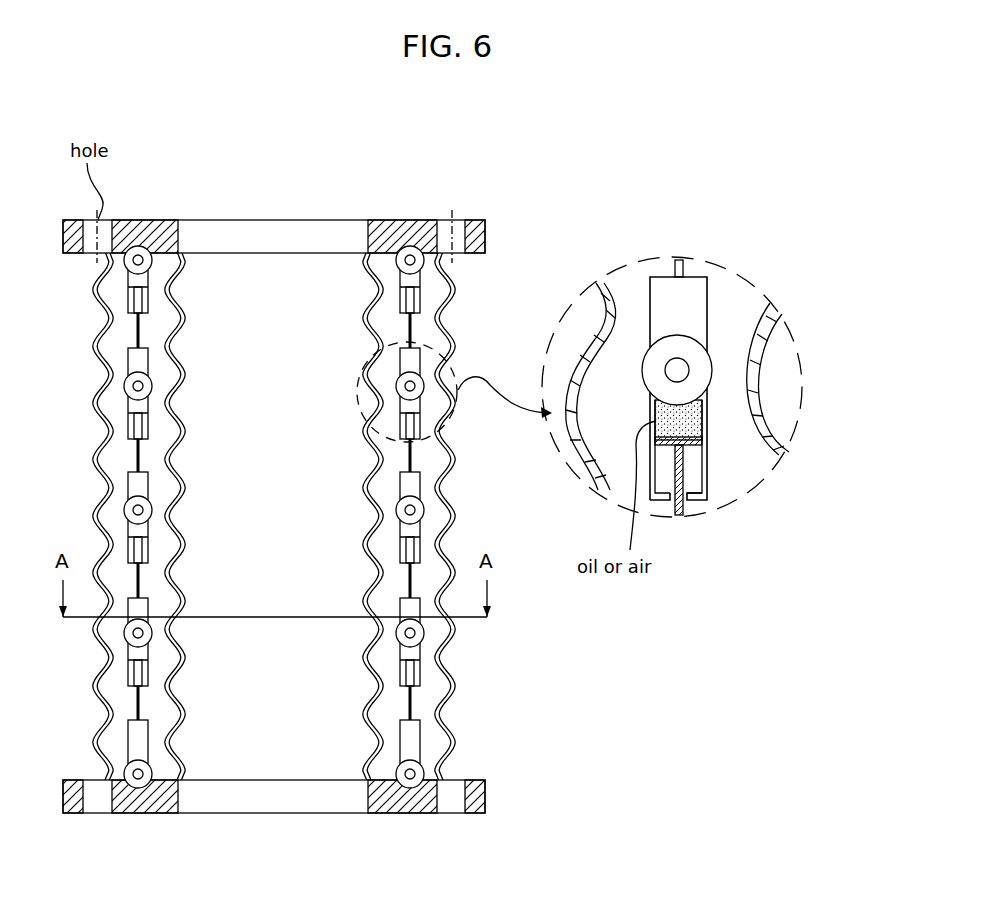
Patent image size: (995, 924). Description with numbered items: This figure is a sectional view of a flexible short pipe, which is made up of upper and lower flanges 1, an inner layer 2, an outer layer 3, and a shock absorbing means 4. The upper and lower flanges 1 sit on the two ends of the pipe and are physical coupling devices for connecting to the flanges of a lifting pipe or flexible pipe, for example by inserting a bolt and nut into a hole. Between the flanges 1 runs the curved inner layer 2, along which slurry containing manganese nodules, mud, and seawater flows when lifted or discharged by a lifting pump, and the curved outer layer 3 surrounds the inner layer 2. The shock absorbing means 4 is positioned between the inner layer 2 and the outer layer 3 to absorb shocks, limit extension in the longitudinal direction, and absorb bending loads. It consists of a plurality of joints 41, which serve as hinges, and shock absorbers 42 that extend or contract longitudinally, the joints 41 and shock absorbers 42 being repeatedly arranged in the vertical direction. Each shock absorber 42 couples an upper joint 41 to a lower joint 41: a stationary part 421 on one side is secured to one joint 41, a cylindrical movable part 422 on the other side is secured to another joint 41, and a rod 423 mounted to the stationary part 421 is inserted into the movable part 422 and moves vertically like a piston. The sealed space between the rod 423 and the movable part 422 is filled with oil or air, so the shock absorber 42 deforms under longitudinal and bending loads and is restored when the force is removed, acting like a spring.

The upper and lower flanges 1 is at (413, 220).
The inner layer 2 is at (182, 714).
The outer layer 3 is at (458, 288).
The shock absorbing means 4 is at (497, 481).
The joints 41 is at (433, 627).
The shock absorbers 42 is at (499, 474).
The stationary part 421 is at (421, 728).
The movable part 422 is at (421, 650).
The rod 423 is at (418, 671).